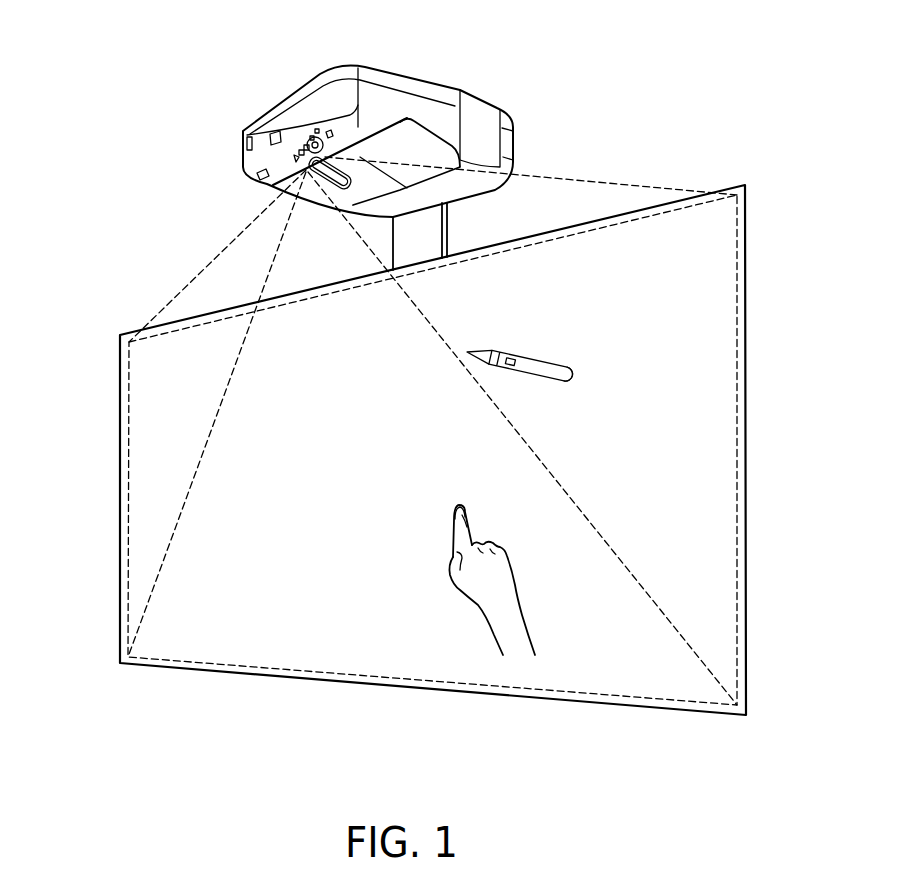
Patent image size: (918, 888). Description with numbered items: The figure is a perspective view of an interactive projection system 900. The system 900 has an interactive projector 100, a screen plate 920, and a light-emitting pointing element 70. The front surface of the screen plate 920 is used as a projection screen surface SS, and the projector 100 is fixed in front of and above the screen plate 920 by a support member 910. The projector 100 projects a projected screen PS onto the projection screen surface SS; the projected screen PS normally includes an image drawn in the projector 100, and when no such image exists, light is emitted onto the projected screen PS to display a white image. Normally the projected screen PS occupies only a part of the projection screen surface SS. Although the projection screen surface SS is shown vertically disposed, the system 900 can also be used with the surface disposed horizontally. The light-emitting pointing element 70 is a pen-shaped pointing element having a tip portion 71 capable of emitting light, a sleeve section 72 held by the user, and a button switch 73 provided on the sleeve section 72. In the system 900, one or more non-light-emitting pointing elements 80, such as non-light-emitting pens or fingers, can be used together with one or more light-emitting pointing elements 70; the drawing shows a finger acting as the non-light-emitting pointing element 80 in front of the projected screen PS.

The interactive projection system 900 is at (147, 109).
The interactive projector 100 is at (410, 78).
The support member 910 is at (450, 227).
The screen plate 920 is at (732, 184).
The light-emitting pointing element 70 is at (532, 360).
The tip portion 71 is at (470, 350).
The sleeve section 72 is at (553, 386).
The button switch 73 is at (505, 366).
The non-light-emitting pointing element 80 is at (460, 527).